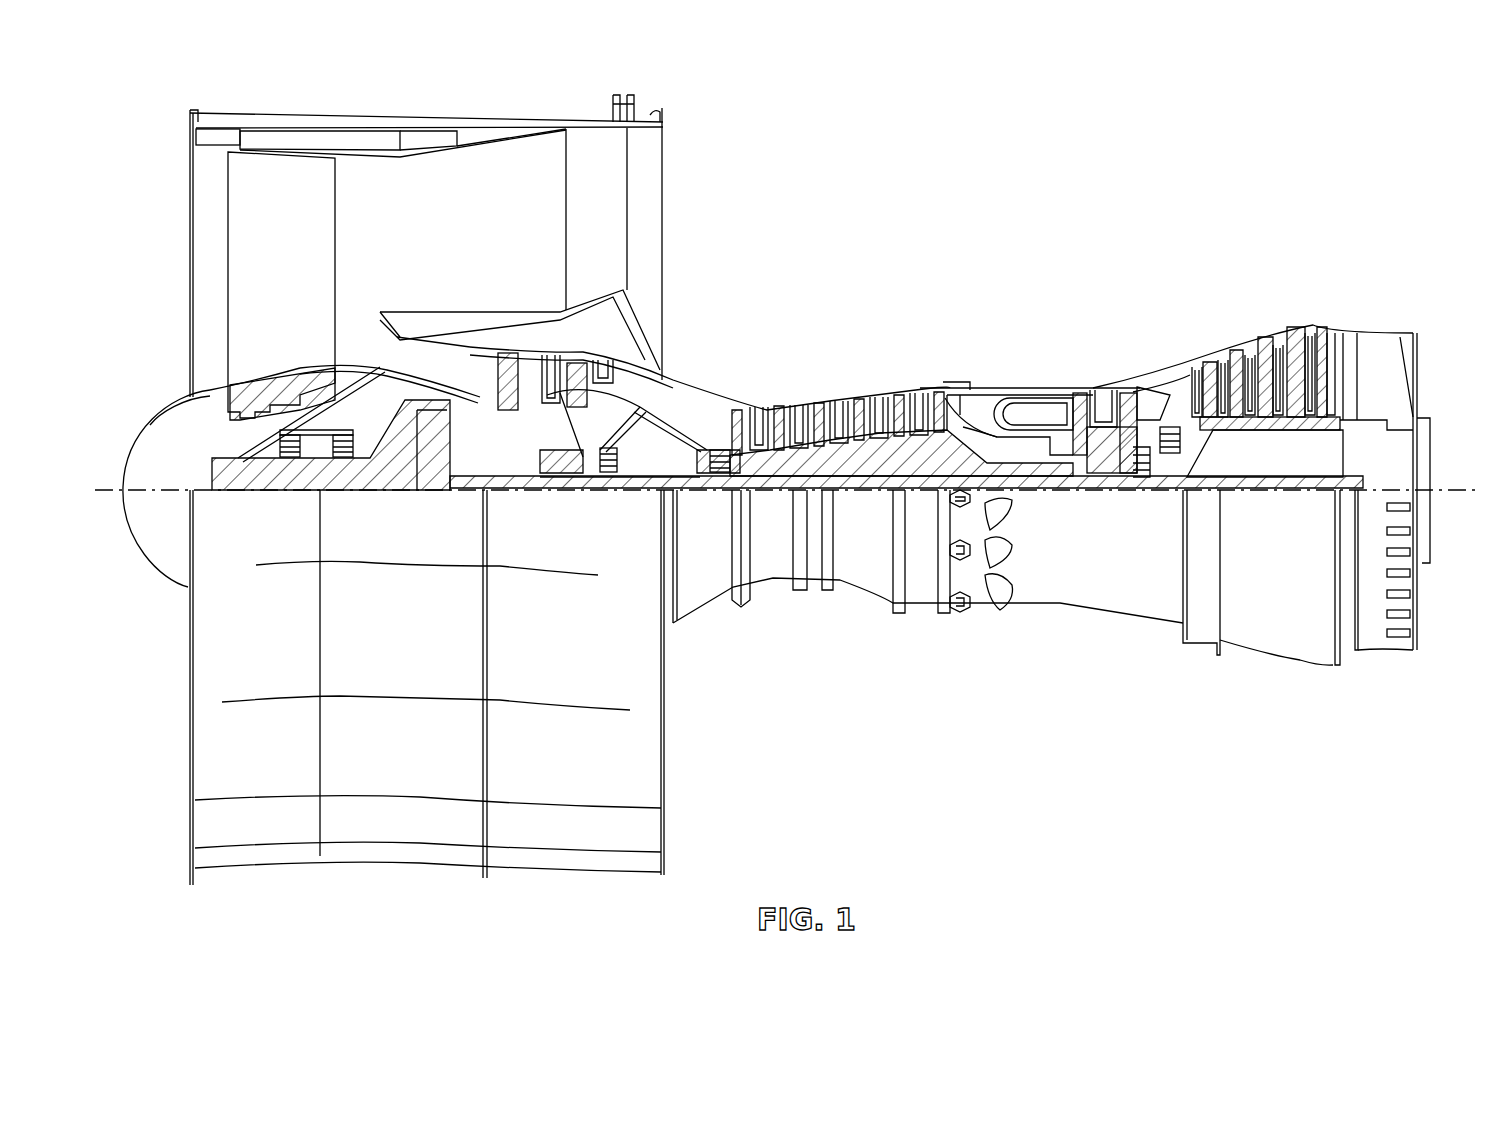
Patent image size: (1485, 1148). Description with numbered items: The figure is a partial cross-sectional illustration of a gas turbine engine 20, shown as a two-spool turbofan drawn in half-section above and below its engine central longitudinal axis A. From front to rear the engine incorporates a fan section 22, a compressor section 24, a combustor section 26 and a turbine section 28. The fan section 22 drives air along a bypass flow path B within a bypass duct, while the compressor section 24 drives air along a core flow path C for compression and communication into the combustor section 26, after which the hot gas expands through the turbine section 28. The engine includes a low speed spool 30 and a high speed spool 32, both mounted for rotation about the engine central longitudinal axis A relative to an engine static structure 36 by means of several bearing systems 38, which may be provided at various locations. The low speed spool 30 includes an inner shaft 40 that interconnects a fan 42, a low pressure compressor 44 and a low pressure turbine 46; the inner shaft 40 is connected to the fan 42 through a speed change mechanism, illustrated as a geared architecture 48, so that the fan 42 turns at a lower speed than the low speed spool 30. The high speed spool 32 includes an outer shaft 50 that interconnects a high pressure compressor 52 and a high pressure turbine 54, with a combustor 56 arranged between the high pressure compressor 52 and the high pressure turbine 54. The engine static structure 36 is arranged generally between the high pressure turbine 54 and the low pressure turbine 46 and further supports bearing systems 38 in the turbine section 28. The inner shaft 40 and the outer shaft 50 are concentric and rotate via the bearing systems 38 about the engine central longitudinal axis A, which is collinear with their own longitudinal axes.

The gas turbine engine 20 is at (1237, 158).
The fan section 22 is at (300, 100).
The compressor section 24 is at (852, 352).
The combustor section 26 is at (1020, 352).
The turbine section 28 is at (1165, 328).
The low speed spool 30 is at (884, 494).
The high speed spool 32 is at (940, 437).
The engine static structure 36 is at (923, 614).
The bearing systems 38 is at (295, 447).
The inner shaft 40 is at (675, 480).
The fan 42 is at (306, 252).
The low pressure compressor 44 is at (577, 370).
The low pressure turbine 46 is at (1270, 350).
The geared architecture 48 is at (430, 455).
The outer shaft 50 is at (1050, 480).
The high pressure compressor 52 is at (845, 460).
The high pressure turbine 54 is at (1105, 386).
The combustor 56 is at (1027, 410).
The engine central longitudinal axis A is at (1440, 490).
The bypass flow path B is at (515, 218).
The core flow path C is at (380, 350).